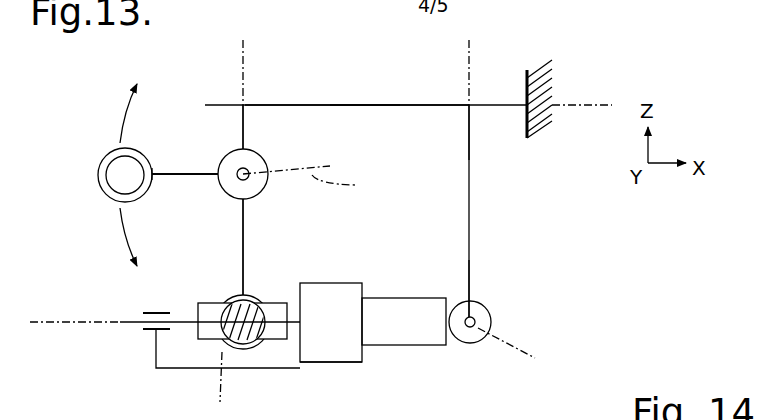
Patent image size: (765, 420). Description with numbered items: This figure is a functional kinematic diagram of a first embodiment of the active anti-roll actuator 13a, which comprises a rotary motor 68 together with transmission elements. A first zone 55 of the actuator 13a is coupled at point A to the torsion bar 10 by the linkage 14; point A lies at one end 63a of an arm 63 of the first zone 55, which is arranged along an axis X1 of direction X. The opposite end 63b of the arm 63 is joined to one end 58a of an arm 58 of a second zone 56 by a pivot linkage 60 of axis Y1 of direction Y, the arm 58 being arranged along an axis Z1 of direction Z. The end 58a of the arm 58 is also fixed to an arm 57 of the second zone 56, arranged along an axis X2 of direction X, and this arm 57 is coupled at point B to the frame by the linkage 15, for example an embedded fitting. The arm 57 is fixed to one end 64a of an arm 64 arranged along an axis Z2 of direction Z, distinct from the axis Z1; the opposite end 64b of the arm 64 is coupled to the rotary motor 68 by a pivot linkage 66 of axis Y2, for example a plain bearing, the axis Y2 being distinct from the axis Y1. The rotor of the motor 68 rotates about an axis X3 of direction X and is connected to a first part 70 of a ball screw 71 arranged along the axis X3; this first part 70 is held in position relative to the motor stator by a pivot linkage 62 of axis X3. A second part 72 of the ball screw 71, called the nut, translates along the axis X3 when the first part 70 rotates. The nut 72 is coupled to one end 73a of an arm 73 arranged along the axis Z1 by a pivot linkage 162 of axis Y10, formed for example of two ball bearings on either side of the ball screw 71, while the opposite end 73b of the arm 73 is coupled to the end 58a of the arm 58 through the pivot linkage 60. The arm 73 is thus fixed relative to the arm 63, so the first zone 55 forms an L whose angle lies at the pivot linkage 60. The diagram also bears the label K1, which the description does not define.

The torsion bar 10 is at (108, 193).
The linkage 14 is at (99, 172).
The actuator 13a is at (297, 92).
The linkage 15 is at (526, 136).
The first zone 55 is at (183, 156).
The second zone 56 is at (394, 100).
The arm 57 is at (325, 104).
The arm 58 is at (245, 128).
The end of arm 58a is at (242, 103).
The pivot linkage 60 is at (226, 158).
The pivot linkage 62 is at (152, 340).
The arm 63 is at (181, 177).
The end of arm 63a is at (157, 171).
The opposite end of arm 63b is at (214, 177).
The arm 64 is at (470, 202).
The end of arm 64a is at (468, 108).
The opposite end of arm 64b is at (486, 306).
The pivot linkage 66 is at (492, 317).
The rotary motor 68 is at (411, 298).
The first part of ball screw 70 is at (247, 330).
The ball screw 71 is at (221, 285).
The second part of ball screw 72 is at (197, 311).
The arm 73 is at (245, 235).
The end of arm 73a is at (244, 292).
The opposite end of arm 73b is at (245, 208).
The pivot linkage 162 is at (267, 297).
The point A is at (156, 181).
The point B is at (508, 104).
The force K1 is at (323, 364).
The axis X1 is at (347, 188).
The axis X2 is at (580, 100).
The axis X3 is at (42, 320).
The axis Y1 is at (298, 170).
The axis Y2 is at (517, 353).
The axis Y10 is at (211, 386).
The axis Z1 is at (241, 50).
The axis Z2 is at (467, 72).